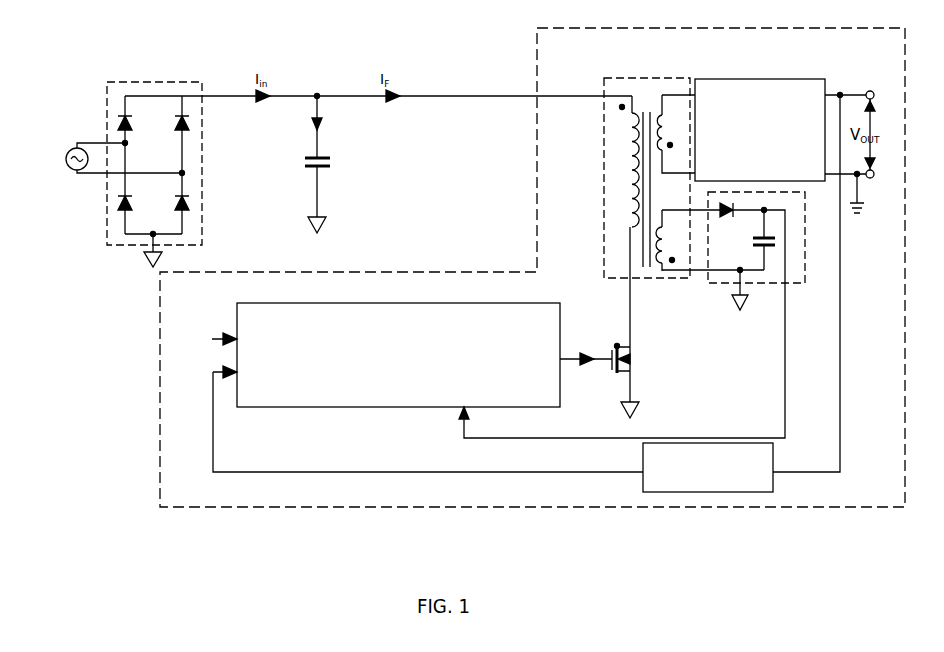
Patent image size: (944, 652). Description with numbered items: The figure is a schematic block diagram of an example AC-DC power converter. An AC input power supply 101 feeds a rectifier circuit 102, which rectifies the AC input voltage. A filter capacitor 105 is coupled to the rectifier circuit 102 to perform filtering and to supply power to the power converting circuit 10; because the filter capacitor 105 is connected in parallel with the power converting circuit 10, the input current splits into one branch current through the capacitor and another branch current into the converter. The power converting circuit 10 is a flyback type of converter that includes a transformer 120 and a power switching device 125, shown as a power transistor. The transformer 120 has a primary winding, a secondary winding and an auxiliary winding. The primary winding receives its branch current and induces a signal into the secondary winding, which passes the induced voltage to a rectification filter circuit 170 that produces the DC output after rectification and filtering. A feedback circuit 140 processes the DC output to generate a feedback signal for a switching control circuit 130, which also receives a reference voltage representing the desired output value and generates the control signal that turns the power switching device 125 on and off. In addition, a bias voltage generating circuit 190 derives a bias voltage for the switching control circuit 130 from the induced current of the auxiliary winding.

The power converting circuit 10 is at (884, 55).
The AC input power supply 101 is at (66, 160).
The rectifier circuit 102 is at (105, 98).
The filter capacitor 105 is at (333, 158).
The transformer 120 is at (648, 78).
The power switching device 125 is at (632, 360).
The switching control circuit 130 is at (414, 378).
The feedback circuit 140 is at (775, 485).
The rectification filter circuit 170 is at (776, 166).
The bias voltage generating circuit 190 is at (763, 284).